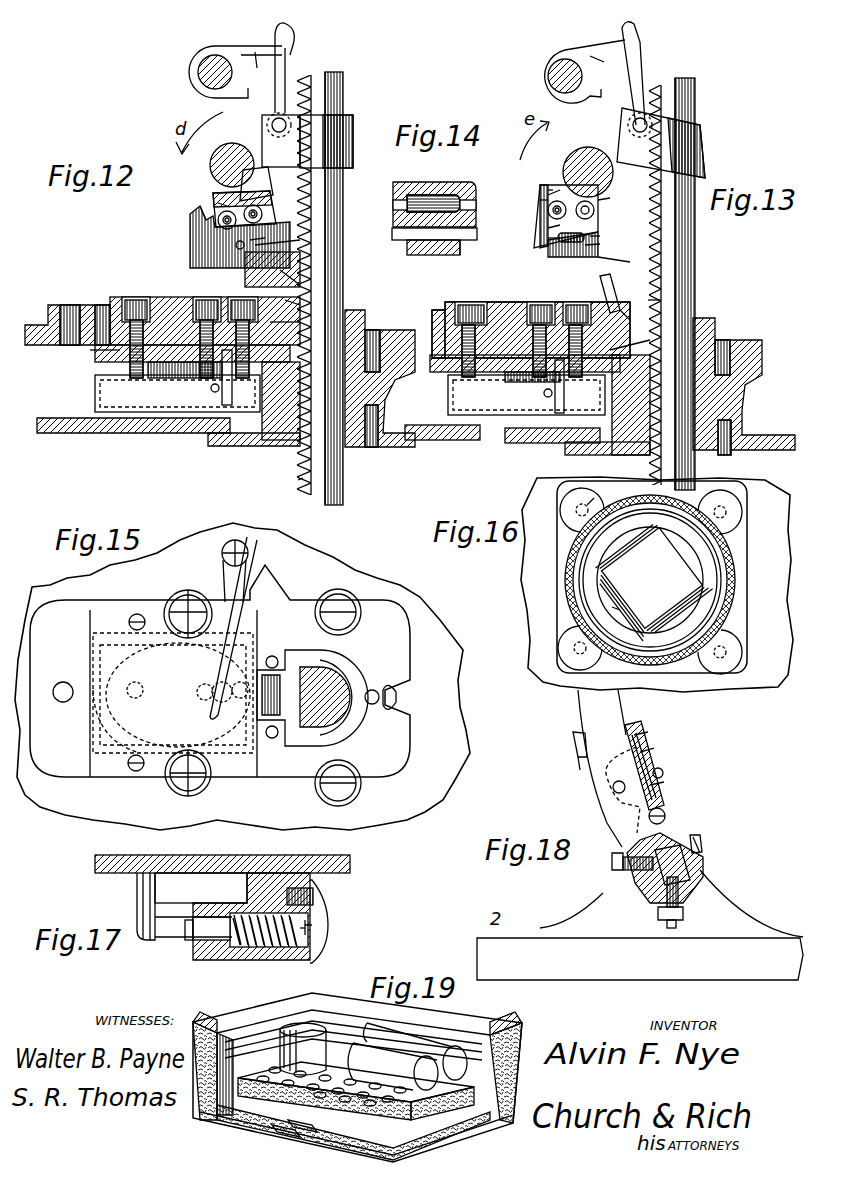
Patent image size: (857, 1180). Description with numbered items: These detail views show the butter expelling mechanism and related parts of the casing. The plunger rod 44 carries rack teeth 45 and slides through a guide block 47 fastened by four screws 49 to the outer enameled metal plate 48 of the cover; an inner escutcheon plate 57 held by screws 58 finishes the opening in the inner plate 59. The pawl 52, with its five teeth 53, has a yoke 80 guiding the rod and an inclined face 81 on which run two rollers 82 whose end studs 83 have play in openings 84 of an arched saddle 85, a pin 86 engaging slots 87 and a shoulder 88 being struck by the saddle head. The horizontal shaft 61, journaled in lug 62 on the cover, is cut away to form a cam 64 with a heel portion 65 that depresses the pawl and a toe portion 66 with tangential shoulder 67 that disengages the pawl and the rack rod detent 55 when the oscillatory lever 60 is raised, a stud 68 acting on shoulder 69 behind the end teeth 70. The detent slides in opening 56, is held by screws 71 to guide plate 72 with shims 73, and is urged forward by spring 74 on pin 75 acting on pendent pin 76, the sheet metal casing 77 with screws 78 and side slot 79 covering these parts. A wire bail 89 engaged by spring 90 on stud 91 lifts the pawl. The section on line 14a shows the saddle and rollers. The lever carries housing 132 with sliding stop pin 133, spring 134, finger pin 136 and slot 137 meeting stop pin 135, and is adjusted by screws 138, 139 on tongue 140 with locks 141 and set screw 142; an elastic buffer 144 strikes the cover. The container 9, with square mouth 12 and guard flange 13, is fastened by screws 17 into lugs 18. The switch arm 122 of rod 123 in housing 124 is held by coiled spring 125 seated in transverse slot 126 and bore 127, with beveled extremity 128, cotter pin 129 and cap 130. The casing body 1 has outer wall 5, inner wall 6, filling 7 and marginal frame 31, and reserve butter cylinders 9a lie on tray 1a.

In FIG. 19, the main double-walled body portion 1 is at (290, 1128).
In FIG. 19, the tray 1a is at (487, 1012).
In FIG. 17, the outer wall 5 is at (205, 865).
In FIG. 19, the outer wall 5 is at (393, 1033).
In FIG. 16, the inner wall 6 is at (745, 703).
In FIG. 19, the inner wall 6 is at (262, 1075).
In FIG. 19, the filling 7 is at (318, 1150).
In FIG. 16, the butter container 9 is at (734, 578).
In FIG. 19, the butter container 9 is at (303, 1049).
In FIG. 19, the reserve butter cylinders 9a is at (440, 1038).
In FIG. 16, the square outlet or mouth 12 is at (640, 558).
In FIG. 16, the guard flange 13 is at (632, 620).
In FIG. 13, the section line 14a— 14a is at (548, 272).
In FIG. 16, the screws 17 is at (582, 513).
In FIG. 16, the lugs 18 is at (727, 512).
In FIG. 19, the marginal frame 31 is at (222, 1040).
In FIG. 12, the plunger rod 44 is at (327, 82).
In FIG. 13, the plunger rod 44 is at (685, 100).
In FIG. 15, the plunger rod 44 is at (330, 672).
In FIG. 12, the teeth 45 is at (297, 482).
In FIG. 13, the teeth 45 is at (664, 292).
In FIG. 15, the teeth 45 is at (300, 735).
In FIG. 12, the guide block 47 is at (40, 322).
In FIG. 13, the guide block 47 is at (440, 315).
In FIG. 15, the guide block 47 is at (395, 730).
In FIG. 15, the outer enameled metal plate 48 is at (100, 790).
In FIG. 18, the outer enameled metal plate 48 is at (640, 959).
In FIG. 15, the screws 49 is at (178, 600).
In FIG. 12, the pawl 52 is at (245, 246).
In FIG. 14, the pawl 52 is at (430, 255).
In FIG. 13, the pawl 52 is at (615, 266).
In FIG. 12, the teeth 53 is at (302, 242).
In FIG. 13, the teeth 53 is at (600, 237).
In FIG. 12, the rack rod detent 55 is at (183, 300).
In FIG. 13, the rack rod detent 55 is at (510, 316).
In FIG. 12, the opening 56 is at (103, 303).
In FIG. 13, the opening 56 is at (438, 310).
In FIG. 12, the inner escutcheon plate 57 is at (248, 448).
In FIG. 13, the inner escutcheon plate 57 is at (590, 460).
In FIG. 12, the screws 58 is at (371, 448).
In FIG. 13, the screws 58 is at (725, 450).
In FIG. 13, the inner plate 59 is at (455, 442).
In FIG. 18, the oscillatory lever 60 is at (603, 713).
In FIG. 18, the horizontal shaft 61 is at (655, 890).
In FIG. 18, the lug 62 is at (600, 888).
In FIG. 12, the cam 64 is at (224, 150).
In FIG. 13, the cam 64 is at (600, 157).
In FIG. 12, the heel portion 65 is at (215, 195).
In FIG. 13, the heel portion 65 is at (568, 185).
In FIG. 12, the toe portion 66 is at (269, 140).
In FIG. 13, the toe portion 66 is at (637, 140).
In FIG. 12, the tangential shoulder 67 is at (256, 184).
In FIG. 13, the tangential shoulder 67 is at (600, 200).
In FIG. 12, the stud 68 is at (302, 287).
In FIG. 13, the stud 68 is at (610, 300).
In FIG. 12, the shoulder 69 is at (296, 318).
In FIG. 13, the shoulder 69 is at (640, 306).
In FIG. 12, the end teeth 70 is at (290, 330).
In FIG. 13, the end teeth 70 is at (652, 338).
In FIG. 12, the screws 71 is at (138, 302).
In FIG. 13, the screws 71 is at (470, 316).
In FIG. 15, the screws 71 is at (138, 698).
In FIG. 12, the guide plate 72 is at (100, 360).
In FIG. 13, the guide plate 72 is at (447, 372).
In FIG. 15, the guide plate 72 is at (90, 655).
In FIG. 12, the shims 73 is at (170, 378).
In FIG. 13, the shims 73 is at (575, 395).
In FIG. 12, the spring 74 is at (210, 389).
In FIG. 13, the spring 74 is at (543, 393).
In FIG. 15, the spring 74 is at (245, 590).
In FIG. 12, the pin 75 is at (100, 352).
In FIG. 15, the pin 75 is at (222, 554).
In FIG. 12, the pendent pin 76 is at (222, 400).
In FIG. 13, the pendent pin 76 is at (555, 405).
In FIG. 15, the pendent pin 76 is at (178, 695).
In FIG. 12, the sheet metal casing 77 is at (97, 392).
In FIG. 13, the sheet metal casing 77 is at (460, 395).
In FIG. 15, the sheet metal casing 77 is at (105, 735).
In FIG. 15, the screws 78 is at (134, 615).
In FIG. 15, the side slot 79 is at (235, 640).
In FIG. 12, the yoke 80 is at (330, 135).
In FIG. 13, the yoke 80 is at (704, 160).
In FIG. 12, the inclined face 81 is at (252, 240).
In FIG. 13, the inclined face 81 is at (548, 228).
In FIG. 12, the rollers 82 is at (222, 221).
In FIG. 14, the rollers 82 is at (440, 200).
In FIG. 12, the end studs 83 is at (248, 216).
In FIG. 14, the end studs 83 is at (470, 206).
In FIG. 13, the end studs 83 is at (550, 210).
In FIG. 14, the openings 84 is at (396, 205).
In FIG. 12, the arched saddle 85 is at (218, 204).
In FIG. 14, the arched saddle 85 is at (425, 182).
In FIG. 13, the arched saddle 85 is at (552, 186).
In FIG. 12, the pin 86 is at (236, 246).
In FIG. 14, the pin 86 is at (462, 252).
In FIG. 13, the pin 86 is at (600, 246).
In FIG. 14, the slots 87 is at (398, 236).
In FIG. 13, the slots 87 is at (548, 240).
In FIG. 12, the shoulder 88 is at (200, 210).
In FIG. 13, the shoulder 88 is at (548, 190).
In FIG. 12, the wire bail 89 is at (286, 72).
In FIG. 13, the wire bail 89 is at (636, 82).
In FIG. 12, the spring 90 is at (257, 68).
In FIG. 13, the spring 90 is at (597, 64).
In FIG. 12, the stud 91 is at (201, 65).
In FIG. 13, the stud 91 is at (550, 70).
In FIG. 17, the yielding switch arm 122 is at (148, 905).
In FIG. 17, the rod 123 is at (168, 942).
In FIG. 17, the housing 124 is at (222, 962).
In FIG. 17, the coiled spring 125 is at (268, 950).
In FIG. 17, the transverse slot 126 is at (308, 930).
In FIG. 17, the bore 127 is at (222, 935).
In FIG. 17, the beveled extremity 128 is at (137, 885).
In FIG. 17, the cotter pin 129 is at (189, 945).
In FIG. 17, the cap 130 is at (310, 950).
In FIG. 18, the housing 132 is at (648, 762).
In FIG. 18, the sliding stop pin 133 is at (664, 775).
In FIG. 18, the spring 134 is at (640, 736).
In FIG. 18, the stop pin 135 is at (666, 816).
In FIG. 18, the finger pin 136 is at (652, 752).
In FIG. 18, the slot 137 is at (662, 790).
In FIG. 18, the screw 138 is at (702, 840).
In FIG. 18, the screw 139 is at (678, 924).
In FIG. 18, the tongue 140 is at (705, 880).
In FIG. 18, the locks 141 is at (702, 852).
In FIG. 18, the set screw 142 is at (612, 865).
In FIG. 18, the elastic buffer 144 is at (580, 760).